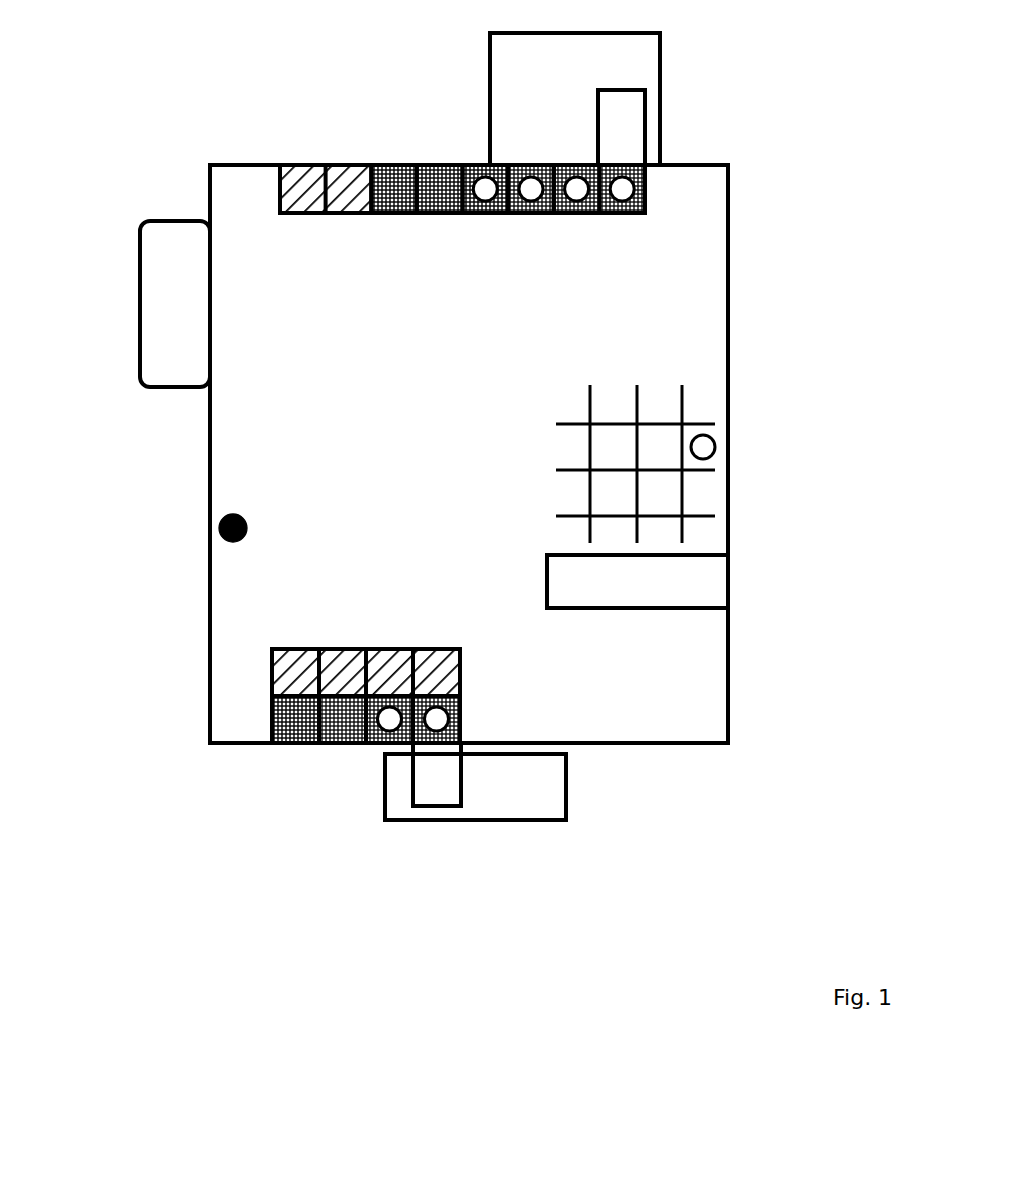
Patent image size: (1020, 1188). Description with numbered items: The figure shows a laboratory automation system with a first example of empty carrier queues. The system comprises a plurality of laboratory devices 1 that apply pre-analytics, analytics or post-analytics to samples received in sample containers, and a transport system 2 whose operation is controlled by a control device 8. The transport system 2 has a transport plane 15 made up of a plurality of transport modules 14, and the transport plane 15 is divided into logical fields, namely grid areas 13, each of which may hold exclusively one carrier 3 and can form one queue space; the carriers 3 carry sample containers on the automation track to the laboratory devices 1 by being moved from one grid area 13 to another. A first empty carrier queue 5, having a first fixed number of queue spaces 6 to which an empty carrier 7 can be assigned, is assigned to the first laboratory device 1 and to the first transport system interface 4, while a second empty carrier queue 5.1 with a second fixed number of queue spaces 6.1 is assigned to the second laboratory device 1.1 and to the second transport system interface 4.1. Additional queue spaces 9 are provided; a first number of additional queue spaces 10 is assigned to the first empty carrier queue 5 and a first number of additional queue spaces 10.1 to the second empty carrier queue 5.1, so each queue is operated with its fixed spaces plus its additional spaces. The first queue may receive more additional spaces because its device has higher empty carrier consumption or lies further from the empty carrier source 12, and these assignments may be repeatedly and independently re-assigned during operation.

The laboratory device 1 is at (645, 44).
The second laboratory device 1.1 is at (553, 780).
The transport system 2 is at (728, 183).
The carrier 3 is at (219, 533).
The transport system interface 4 is at (631, 118).
The second transport system interface 4.1 is at (431, 775).
The first empty carrier queue 5 is at (535, 213).
The second empty carrier queue 5.1 is at (348, 675).
The queue spaces 6 is at (580, 213).
The queue spaces 6.1 is at (390, 700).
The empty carrier 7 is at (620, 195).
The control device 8 is at (173, 316).
The additional queue spaces 9 is at (376, 213).
The first number of additional queue spaces 10 is at (402, 200).
The first number of additional queue spaces 10.1 is at (283, 743).
The empty carrier source 12 is at (703, 447).
The grid area 13 is at (703, 498).
The transport module 14 is at (703, 578).
The transport plane 15 is at (700, 322).